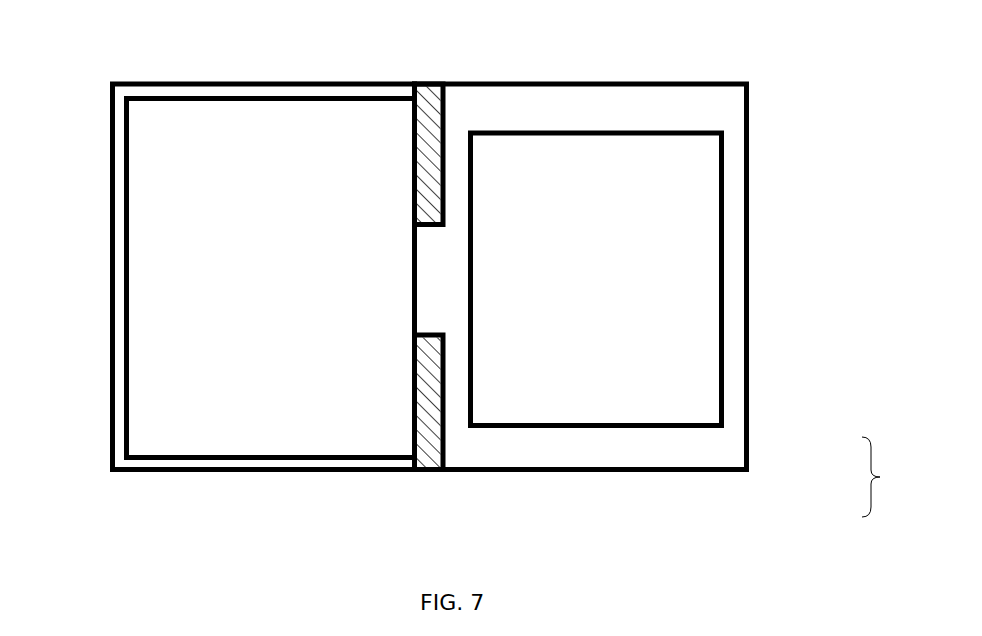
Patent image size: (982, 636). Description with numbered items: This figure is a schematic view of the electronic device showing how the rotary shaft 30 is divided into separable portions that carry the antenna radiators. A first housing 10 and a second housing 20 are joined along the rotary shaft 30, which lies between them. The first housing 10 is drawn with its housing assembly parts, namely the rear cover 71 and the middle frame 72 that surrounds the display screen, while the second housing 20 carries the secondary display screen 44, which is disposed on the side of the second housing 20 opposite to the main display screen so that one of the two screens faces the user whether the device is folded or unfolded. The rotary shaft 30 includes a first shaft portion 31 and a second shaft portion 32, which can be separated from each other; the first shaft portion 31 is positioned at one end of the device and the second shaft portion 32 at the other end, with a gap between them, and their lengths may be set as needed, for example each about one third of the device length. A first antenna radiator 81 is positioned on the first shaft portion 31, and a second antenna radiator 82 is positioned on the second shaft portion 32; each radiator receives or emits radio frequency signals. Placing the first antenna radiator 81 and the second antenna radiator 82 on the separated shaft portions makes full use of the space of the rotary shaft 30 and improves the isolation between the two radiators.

The first housing 10 is at (214, 76).
The second housing 20 is at (631, 76).
The rotary shaft 30 is at (888, 477).
The first shaft portion 31 is at (443, 220).
The second shaft portion 32 is at (445, 335).
The secondary display screen 44 is at (672, 184).
The rear cover 71 is at (222, 258).
The middle frame 72 is at (111, 152).
The first antenna radiator 81 is at (432, 108).
The second antenna radiator 82 is at (427, 418).